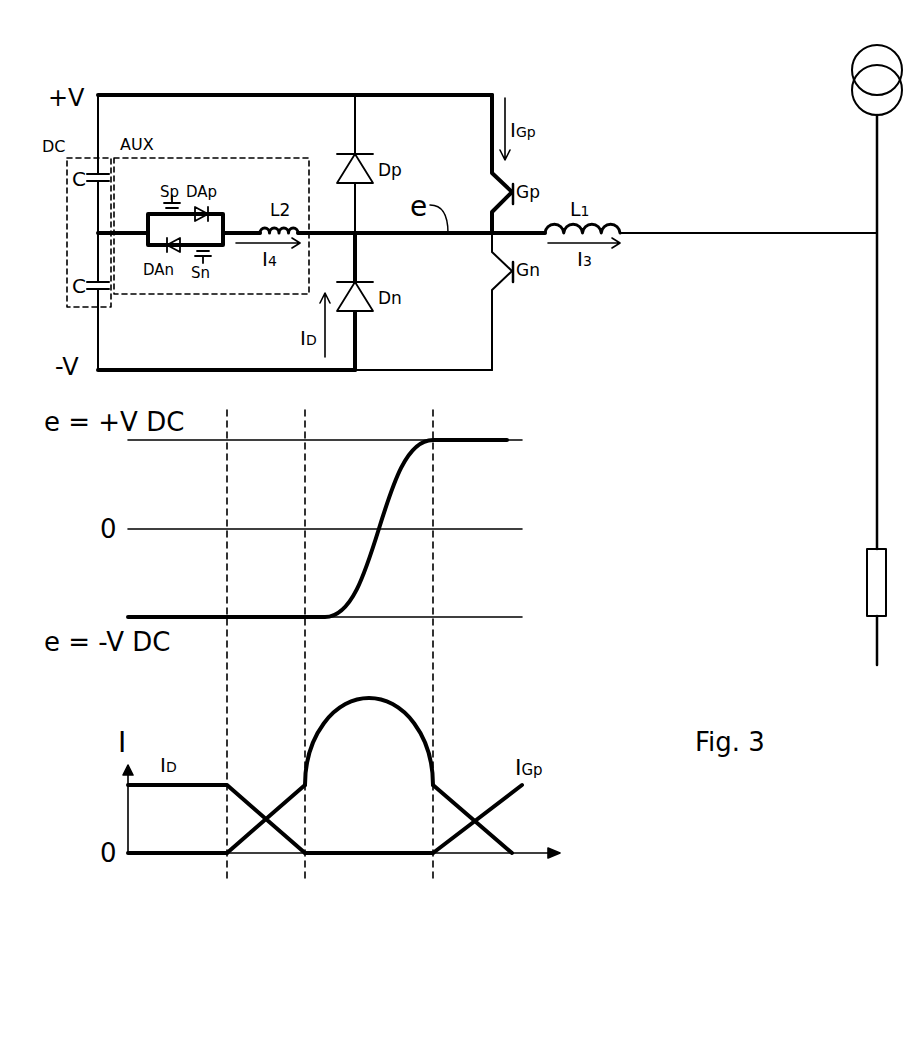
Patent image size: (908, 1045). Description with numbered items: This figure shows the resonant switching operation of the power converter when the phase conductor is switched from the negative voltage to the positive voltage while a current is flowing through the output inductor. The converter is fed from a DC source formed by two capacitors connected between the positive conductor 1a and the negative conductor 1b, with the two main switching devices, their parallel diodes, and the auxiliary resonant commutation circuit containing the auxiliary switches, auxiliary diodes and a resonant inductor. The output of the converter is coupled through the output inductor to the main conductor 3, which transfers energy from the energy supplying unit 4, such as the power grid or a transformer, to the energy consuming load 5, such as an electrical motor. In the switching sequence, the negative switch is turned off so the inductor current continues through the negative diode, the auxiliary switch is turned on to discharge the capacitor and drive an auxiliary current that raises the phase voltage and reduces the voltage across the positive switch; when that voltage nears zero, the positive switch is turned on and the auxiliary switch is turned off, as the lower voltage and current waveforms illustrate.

The positive conductor 1a is at (183, 95).
The negative conductor 1b is at (163, 372).
The main conductor 3 is at (876, 302).
The energy supplying unit 4 is at (856, 80).
The energy consuming load 5 is at (868, 562).